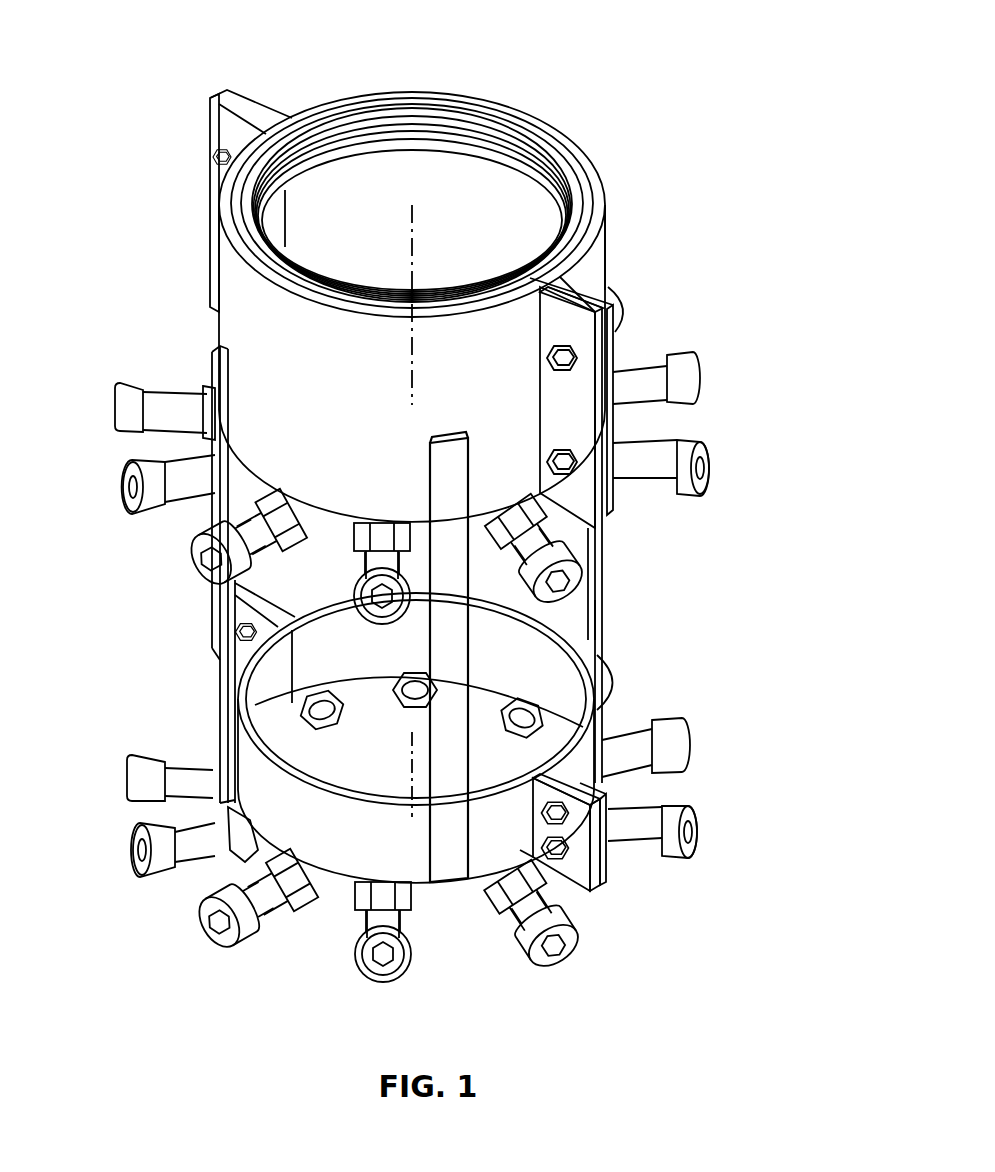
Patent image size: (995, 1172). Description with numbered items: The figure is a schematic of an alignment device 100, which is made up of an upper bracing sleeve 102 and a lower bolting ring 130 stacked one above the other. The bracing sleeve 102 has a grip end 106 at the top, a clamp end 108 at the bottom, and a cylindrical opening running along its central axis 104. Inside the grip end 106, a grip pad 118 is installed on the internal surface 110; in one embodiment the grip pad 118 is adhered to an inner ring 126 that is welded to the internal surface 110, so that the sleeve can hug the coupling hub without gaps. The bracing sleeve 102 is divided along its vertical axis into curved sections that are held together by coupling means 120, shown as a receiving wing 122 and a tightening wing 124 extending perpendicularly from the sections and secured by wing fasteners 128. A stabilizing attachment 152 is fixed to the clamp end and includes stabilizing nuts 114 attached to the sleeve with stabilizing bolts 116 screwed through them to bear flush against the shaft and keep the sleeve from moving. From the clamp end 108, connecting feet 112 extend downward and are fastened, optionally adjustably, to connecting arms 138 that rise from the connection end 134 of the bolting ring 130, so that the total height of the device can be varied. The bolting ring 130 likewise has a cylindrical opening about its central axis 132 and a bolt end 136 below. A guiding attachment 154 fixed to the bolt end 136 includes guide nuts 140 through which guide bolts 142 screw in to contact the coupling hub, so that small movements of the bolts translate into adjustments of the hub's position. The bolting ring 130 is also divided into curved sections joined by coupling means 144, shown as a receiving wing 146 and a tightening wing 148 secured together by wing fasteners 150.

The alignment device 100 is at (714, 40).
The bracing sleeve 102 is at (736, 258).
The central axis 104 is at (415, 212).
The grip end 106 is at (586, 106).
The clamp end 108 is at (656, 526).
The internal surface 110 is at (428, 103).
The connecting foot 112 is at (613, 567).
The stabilizing nut 114 is at (560, 498).
The stabilizing bolt 116 is at (686, 445).
The grip pad 118 is at (372, 130).
The coupling means 120 is at (205, 88).
The receiving wing 122 is at (572, 402).
The tightening wing 124 is at (580, 300).
The inner ring 126 is at (568, 190).
The wing fastener 128 is at (550, 354).
The bolting ring 130 is at (736, 778).
The central axis 132 is at (410, 750).
The connection end 134 is at (630, 690).
The bolt end 136 is at (208, 880).
The connecting arm 138 is at (221, 678).
The guide nut 140 is at (463, 925).
The guide bolt 142 is at (207, 930).
The coupling means 144 is at (612, 890).
The receiving wing 146 is at (606, 862).
The tightening wing 148 is at (578, 875).
The wing fastener 150 is at (547, 815).
The stabilizing attachment 152 is at (166, 372).
The guiding attachment 154 is at (174, 745).